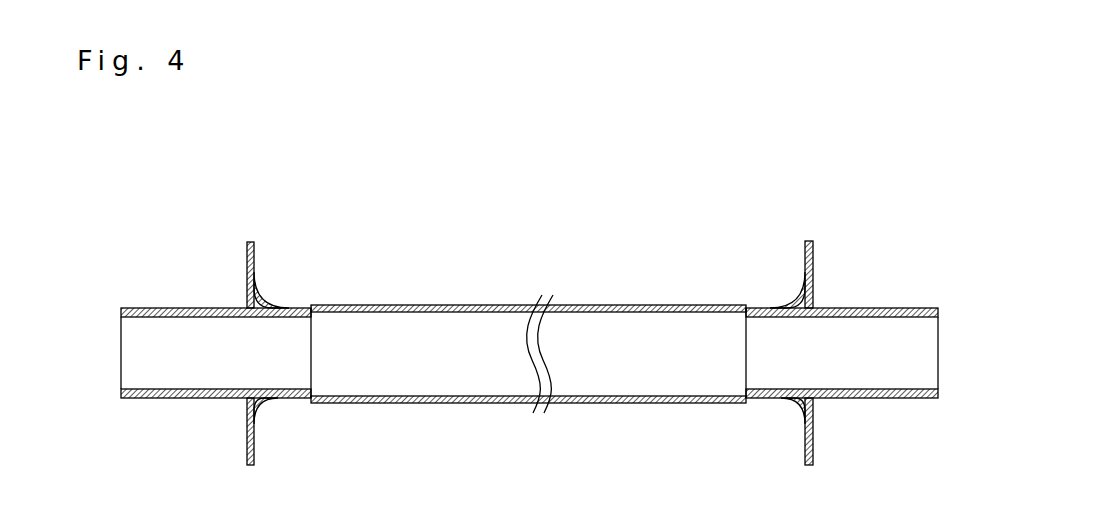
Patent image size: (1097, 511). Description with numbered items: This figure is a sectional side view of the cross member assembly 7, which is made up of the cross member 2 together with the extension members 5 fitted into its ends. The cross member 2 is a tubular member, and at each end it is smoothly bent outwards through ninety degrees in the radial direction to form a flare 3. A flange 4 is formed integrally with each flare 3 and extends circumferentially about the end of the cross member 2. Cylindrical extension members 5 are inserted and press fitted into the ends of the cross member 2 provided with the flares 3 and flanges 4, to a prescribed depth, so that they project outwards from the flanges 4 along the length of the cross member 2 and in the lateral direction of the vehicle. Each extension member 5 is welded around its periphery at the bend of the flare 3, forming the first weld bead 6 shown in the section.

The cross member 2 is at (458, 302).
The flare 3 is at (264, 292).
The flange 4 is at (254, 250).
The extension member 5 is at (176, 308).
The first weld bead 6 is at (242, 402).
The cross member assembly 7 is at (577, 264).